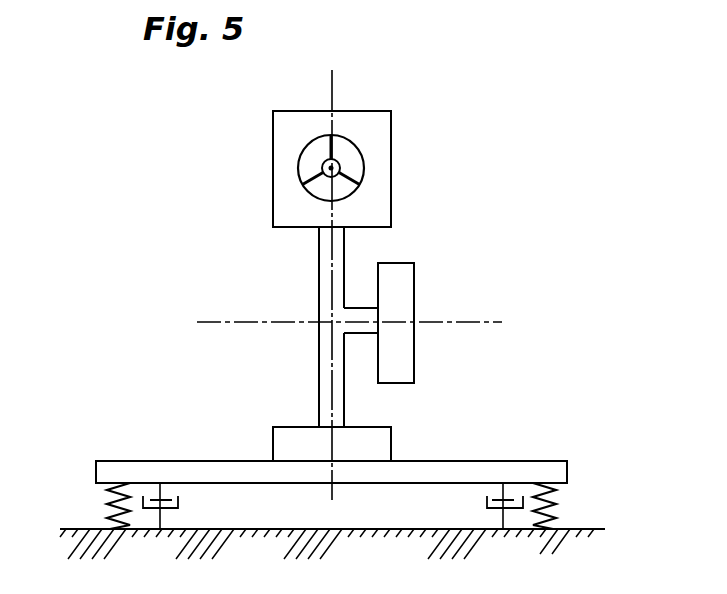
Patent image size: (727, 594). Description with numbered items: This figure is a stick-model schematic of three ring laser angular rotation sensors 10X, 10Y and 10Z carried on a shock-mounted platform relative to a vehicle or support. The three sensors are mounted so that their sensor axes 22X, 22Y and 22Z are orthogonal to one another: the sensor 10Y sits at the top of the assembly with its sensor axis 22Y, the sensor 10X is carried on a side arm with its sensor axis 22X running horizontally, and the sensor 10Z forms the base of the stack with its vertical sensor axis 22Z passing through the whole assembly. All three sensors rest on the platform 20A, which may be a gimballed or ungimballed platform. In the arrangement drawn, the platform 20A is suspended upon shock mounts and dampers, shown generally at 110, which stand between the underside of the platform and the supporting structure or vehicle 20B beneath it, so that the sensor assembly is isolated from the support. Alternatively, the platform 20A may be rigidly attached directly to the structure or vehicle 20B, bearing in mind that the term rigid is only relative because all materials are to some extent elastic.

The ring laser angular rotation sensor 10Y is at (258, 126).
The sensor axis 22Y is at (336, 167).
The sensor axis 22Z is at (333, 96).
The sensor axis 22X is at (227, 319).
The ring laser angular rotation sensor 10X is at (424, 270).
The ring laser angular rotation sensor 10Z is at (277, 420).
The platform 20A is at (470, 454).
The shock mounts and dampers 110 is at (96, 499).
The structure or vehicle 20B is at (366, 538).